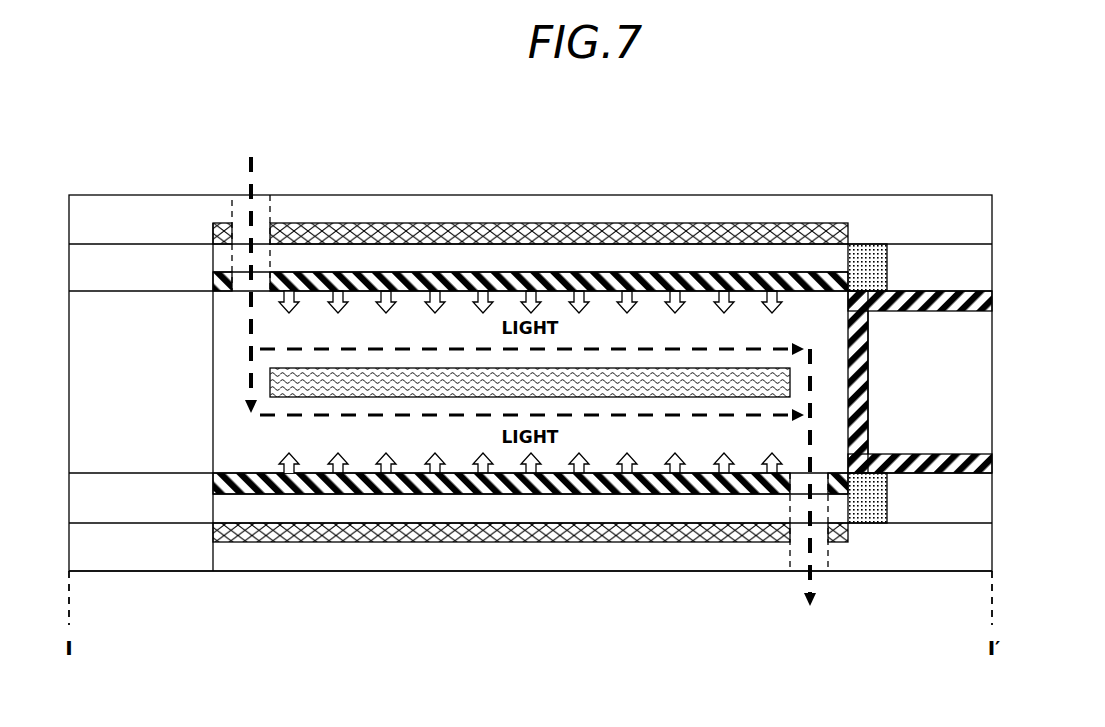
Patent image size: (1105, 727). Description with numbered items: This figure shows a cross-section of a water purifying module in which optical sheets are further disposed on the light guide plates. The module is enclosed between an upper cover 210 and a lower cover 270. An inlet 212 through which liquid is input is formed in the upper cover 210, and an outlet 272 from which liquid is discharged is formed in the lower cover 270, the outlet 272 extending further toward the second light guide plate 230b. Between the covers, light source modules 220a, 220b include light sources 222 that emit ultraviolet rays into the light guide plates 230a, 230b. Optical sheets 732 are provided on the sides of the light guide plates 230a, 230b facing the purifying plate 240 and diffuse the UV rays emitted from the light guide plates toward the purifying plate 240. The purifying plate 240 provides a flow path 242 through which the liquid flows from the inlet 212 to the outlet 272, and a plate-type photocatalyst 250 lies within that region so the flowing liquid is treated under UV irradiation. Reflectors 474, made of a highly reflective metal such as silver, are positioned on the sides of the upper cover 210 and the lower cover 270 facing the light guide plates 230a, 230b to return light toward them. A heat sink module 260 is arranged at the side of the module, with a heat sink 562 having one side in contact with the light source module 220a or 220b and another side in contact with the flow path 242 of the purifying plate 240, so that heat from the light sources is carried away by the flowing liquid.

The upper cover 210 is at (992, 220).
The inlet 212 is at (241, 192).
The light source module 220a is at (992, 270).
The light source module 220b is at (992, 498).
The light source 222 is at (857, 244).
The light guide plate 230a is at (467, 265).
The second light guide plate 230b is at (537, 508).
The purifying plate 240 is at (868, 347).
The flow path 242 is at (250, 465).
The plate-type photocatalyst 250 is at (423, 395).
The heat sink module 260 is at (992, 423).
The lower cover 270 is at (992, 548).
The outlet 272 is at (814, 572).
The reflector 474 is at (733, 225).
The heat sink 562 is at (992, 300).
The optical sheet 732 is at (550, 273).